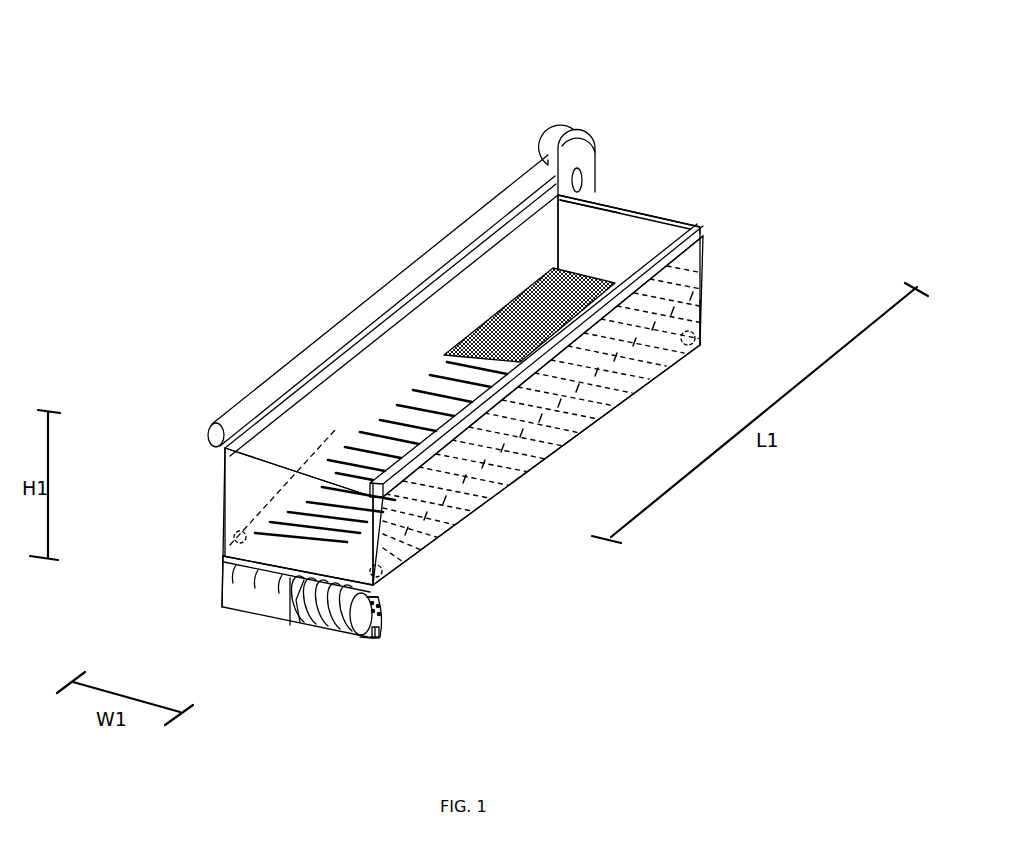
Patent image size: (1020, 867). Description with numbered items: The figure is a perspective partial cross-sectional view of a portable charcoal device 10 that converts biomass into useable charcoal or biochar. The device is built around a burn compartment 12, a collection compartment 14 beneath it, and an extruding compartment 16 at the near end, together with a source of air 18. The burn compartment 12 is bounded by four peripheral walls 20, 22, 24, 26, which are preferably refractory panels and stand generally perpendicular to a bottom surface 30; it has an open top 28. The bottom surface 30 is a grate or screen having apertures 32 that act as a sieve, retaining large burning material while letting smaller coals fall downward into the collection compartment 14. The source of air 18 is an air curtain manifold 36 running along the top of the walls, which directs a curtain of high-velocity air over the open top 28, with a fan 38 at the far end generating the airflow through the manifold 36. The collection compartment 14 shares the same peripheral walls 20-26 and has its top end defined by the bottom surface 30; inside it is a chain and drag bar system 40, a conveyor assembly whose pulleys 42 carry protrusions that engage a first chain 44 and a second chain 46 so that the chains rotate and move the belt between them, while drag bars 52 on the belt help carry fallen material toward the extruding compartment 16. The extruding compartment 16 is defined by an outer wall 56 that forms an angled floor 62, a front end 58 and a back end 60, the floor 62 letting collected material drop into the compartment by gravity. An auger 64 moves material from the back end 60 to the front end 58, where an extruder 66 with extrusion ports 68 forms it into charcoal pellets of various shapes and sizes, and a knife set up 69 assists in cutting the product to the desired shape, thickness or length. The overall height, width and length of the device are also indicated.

The portable charcoal device 10 is at (218, 52).
The burn compartment 12 is at (706, 262).
The collection compartment 14 is at (703, 328).
The extruding compartment 16 is at (212, 582).
The source of air 18 is at (566, 112).
The peripheral wall 20 is at (250, 493).
The peripheral wall 22 is at (648, 235).
The peripheral wall 24 is at (677, 292).
The peripheral wall 26 is at (232, 463).
The open top 28 is at (620, 186).
The bottom surface 30 is at (586, 272).
The apertures 32 is at (518, 318).
The air curtain manifold 36 is at (410, 260).
The fan 38 is at (590, 148).
The chain and drag bar system 40 is at (462, 520).
The pulleys 42 is at (240, 538).
The first chain 44 is at (660, 345).
The second chain 46 is at (250, 512).
The drag bars 52 is at (383, 417).
The outer wall 56 is at (266, 611).
The front end 58 is at (390, 617).
The back end 60 is at (218, 598).
The floor 62 is at (392, 602).
The auger 64 is at (352, 610).
The extruder 66 is at (370, 641).
The extrusion ports 68 is at (369, 618).
The knife set up 69 is at (382, 632).